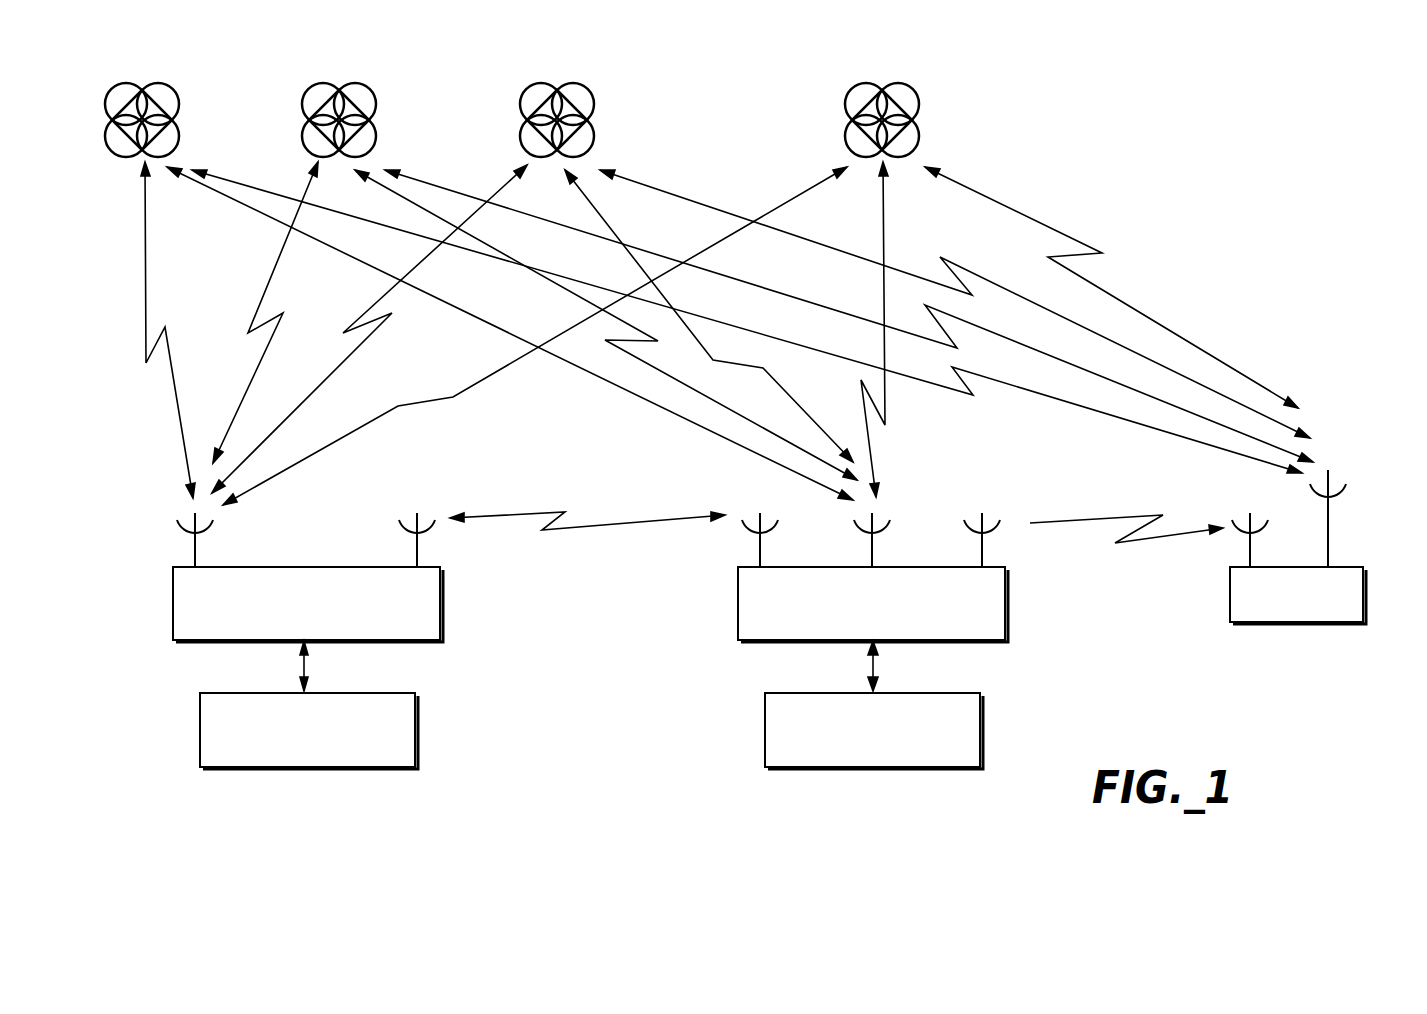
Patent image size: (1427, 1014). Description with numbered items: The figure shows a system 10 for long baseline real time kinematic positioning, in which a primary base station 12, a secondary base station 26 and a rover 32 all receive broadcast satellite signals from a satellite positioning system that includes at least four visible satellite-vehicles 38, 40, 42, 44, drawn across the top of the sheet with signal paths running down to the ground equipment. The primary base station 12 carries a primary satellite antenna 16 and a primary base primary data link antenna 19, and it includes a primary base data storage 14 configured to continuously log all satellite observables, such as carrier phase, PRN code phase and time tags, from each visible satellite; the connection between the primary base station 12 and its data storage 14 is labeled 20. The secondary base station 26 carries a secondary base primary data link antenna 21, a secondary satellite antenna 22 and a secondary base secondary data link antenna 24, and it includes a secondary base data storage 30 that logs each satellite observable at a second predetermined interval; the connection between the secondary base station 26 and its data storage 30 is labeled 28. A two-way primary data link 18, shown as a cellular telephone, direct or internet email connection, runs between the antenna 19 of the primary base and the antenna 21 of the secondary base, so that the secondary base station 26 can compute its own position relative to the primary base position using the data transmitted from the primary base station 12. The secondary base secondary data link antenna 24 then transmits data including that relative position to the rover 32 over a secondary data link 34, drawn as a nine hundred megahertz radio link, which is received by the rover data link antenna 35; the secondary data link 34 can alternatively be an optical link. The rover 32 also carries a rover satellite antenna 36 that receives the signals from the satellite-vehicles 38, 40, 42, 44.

The system 10 is at (1222, 120).
The primary base station 12 is at (187, 598).
The primary base data storage 14 is at (212, 735).
The primary satellite antenna 16 is at (180, 524).
The primary data link 18 is at (603, 528).
The primary base primary data link antenna 19 is at (400, 524).
The data link 20 is at (296, 668).
The secondary base primary data link antenna 21 is at (745, 526).
The secondary satellite antenna 22 is at (858, 526).
The secondary base secondary data link antenna 24 is at (968, 526).
The secondary base station 26 is at (752, 598).
The data link 28 is at (865, 668).
The secondary base data storage 30 is at (777, 735).
The rover 32 is at (1350, 588).
The secondary data link 34 is at (1148, 542).
The rover data link antenna 35 is at (1238, 527).
The rover satellite antenna 36 is at (1345, 493).
The satellite-vehicle 38 is at (157, 85).
The satellite-vehicle 40 is at (353, 85).
The satellite-vehicle 42 is at (572, 85).
The satellite-vehicle 44 is at (897, 85).